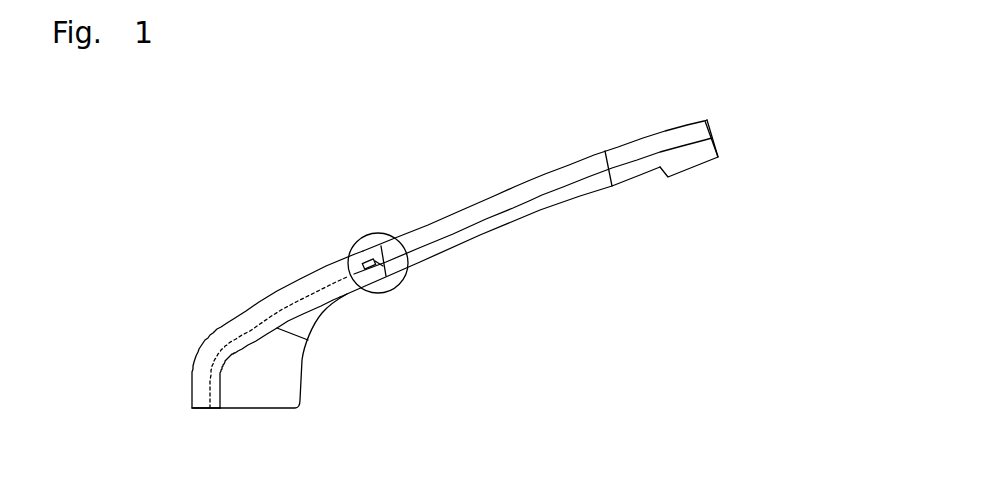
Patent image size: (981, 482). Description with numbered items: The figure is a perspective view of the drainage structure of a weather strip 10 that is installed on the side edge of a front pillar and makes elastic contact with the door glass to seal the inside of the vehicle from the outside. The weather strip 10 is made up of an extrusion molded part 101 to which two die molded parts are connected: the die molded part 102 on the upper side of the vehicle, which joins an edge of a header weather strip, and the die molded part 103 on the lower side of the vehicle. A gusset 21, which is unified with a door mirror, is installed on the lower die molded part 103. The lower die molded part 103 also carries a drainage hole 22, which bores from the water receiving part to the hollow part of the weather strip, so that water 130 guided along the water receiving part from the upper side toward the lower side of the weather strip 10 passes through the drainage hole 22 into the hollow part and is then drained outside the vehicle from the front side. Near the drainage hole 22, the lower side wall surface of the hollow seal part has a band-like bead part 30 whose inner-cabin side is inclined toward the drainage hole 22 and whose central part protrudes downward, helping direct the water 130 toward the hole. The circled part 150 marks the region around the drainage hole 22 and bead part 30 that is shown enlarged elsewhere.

The weather strip 10 is at (445, 255).
The gusset 21 is at (287, 381).
The drainage hole 22 is at (376, 294).
The bead part 30 is at (393, 252).
The extrusion molded part 101 is at (598, 132).
The die molded part 102 is at (702, 96).
The die molded part 103 is at (135, 408).
The water 130 is at (212, 410).
The part 150 is at (403, 284).